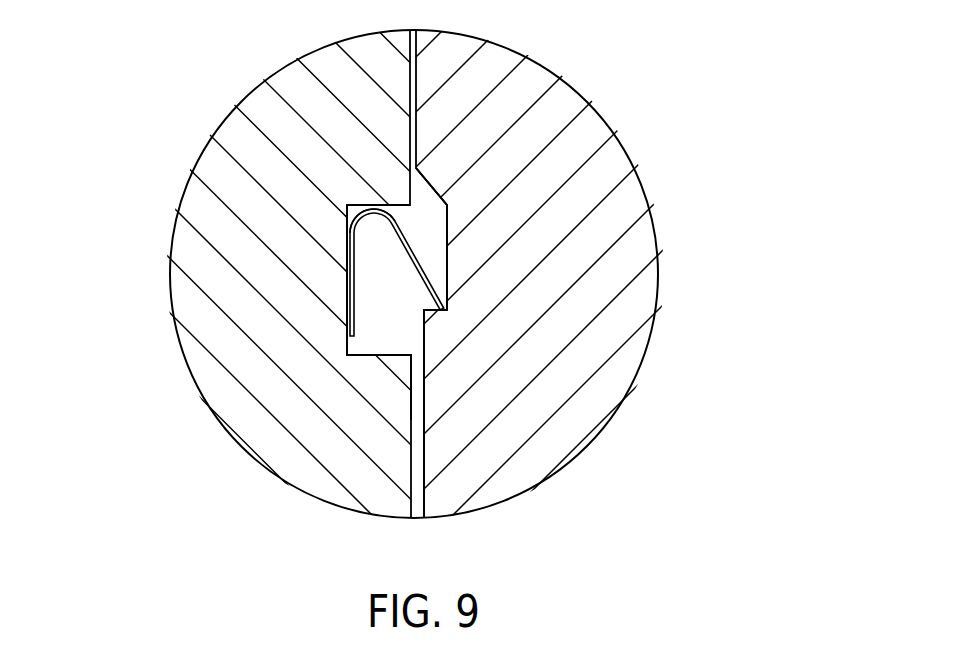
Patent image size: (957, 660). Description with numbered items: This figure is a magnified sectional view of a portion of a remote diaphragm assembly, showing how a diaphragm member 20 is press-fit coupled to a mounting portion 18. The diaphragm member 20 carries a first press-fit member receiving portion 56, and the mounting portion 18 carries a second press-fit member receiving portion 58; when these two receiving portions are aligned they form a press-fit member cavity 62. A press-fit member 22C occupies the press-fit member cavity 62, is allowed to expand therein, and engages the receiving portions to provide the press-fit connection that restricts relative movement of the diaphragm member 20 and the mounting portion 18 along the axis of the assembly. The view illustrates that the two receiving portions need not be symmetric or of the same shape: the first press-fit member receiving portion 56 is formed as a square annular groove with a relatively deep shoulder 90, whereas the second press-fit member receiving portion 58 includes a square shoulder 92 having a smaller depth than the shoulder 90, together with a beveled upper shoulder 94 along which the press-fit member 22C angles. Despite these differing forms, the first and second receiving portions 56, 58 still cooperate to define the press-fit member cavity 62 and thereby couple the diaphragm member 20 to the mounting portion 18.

The mounting portion 18 is at (613, 412).
The diaphragm member 20 is at (182, 302).
The first press-fit member receiving portion 56 is at (370, 343).
The shoulder 90 is at (378, 358).
The square shoulder 92 is at (427, 312).
The second press-fit member receiving portion 58 is at (433, 217).
The beveled upper shoulder 94 is at (433, 189).
The press-fit member 22C is at (428, 272).
The press-fit member cavity 62 is at (385, 257).